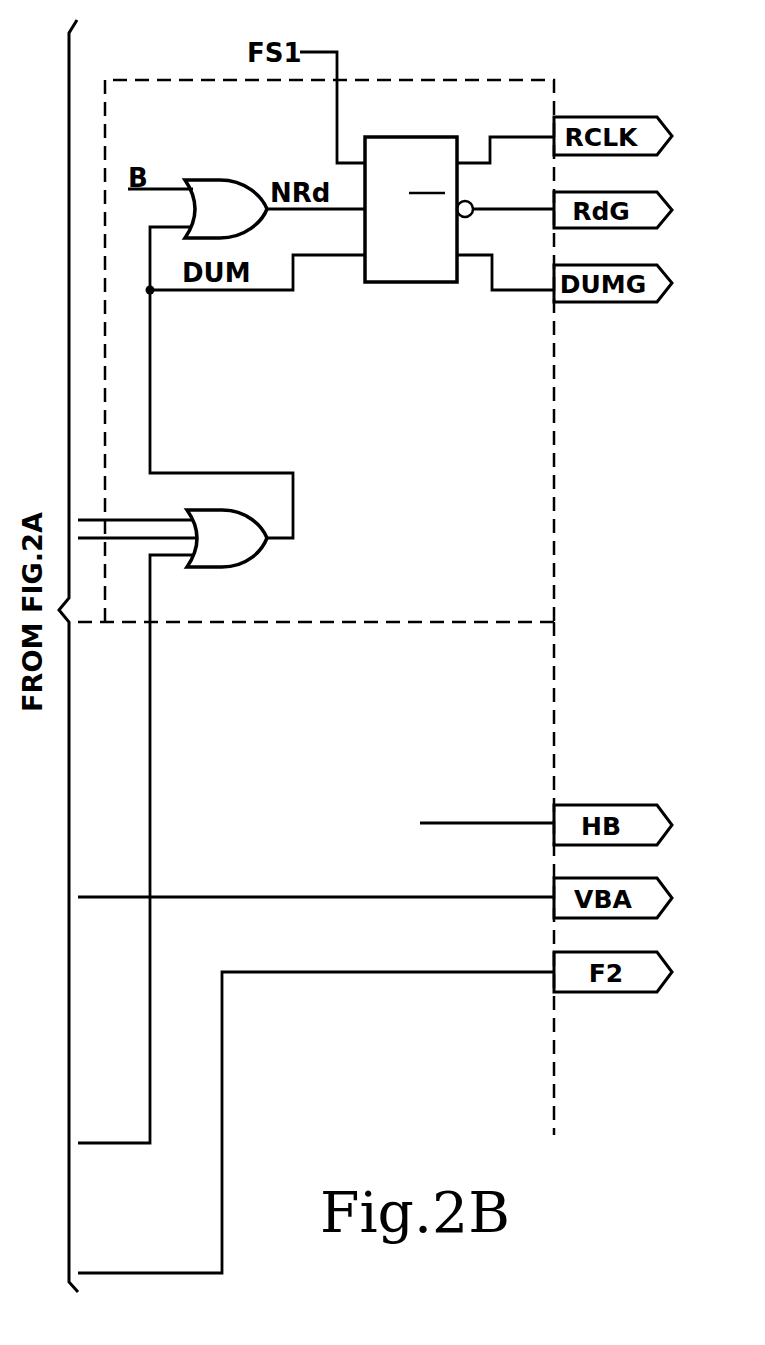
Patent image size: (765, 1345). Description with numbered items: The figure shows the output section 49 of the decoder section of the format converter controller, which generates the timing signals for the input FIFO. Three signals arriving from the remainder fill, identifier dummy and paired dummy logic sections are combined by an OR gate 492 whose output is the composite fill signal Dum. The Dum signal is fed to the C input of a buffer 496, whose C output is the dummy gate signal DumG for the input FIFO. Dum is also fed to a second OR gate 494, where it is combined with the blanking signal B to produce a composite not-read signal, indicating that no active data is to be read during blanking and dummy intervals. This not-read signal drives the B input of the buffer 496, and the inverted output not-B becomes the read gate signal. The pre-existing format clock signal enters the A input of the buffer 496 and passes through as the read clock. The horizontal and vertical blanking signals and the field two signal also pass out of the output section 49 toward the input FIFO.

The output section 49 is at (175, 80).
The OR gate 492 is at (237, 567).
The second OR gate 494 is at (237, 178).
The buffer 496 is at (437, 282).